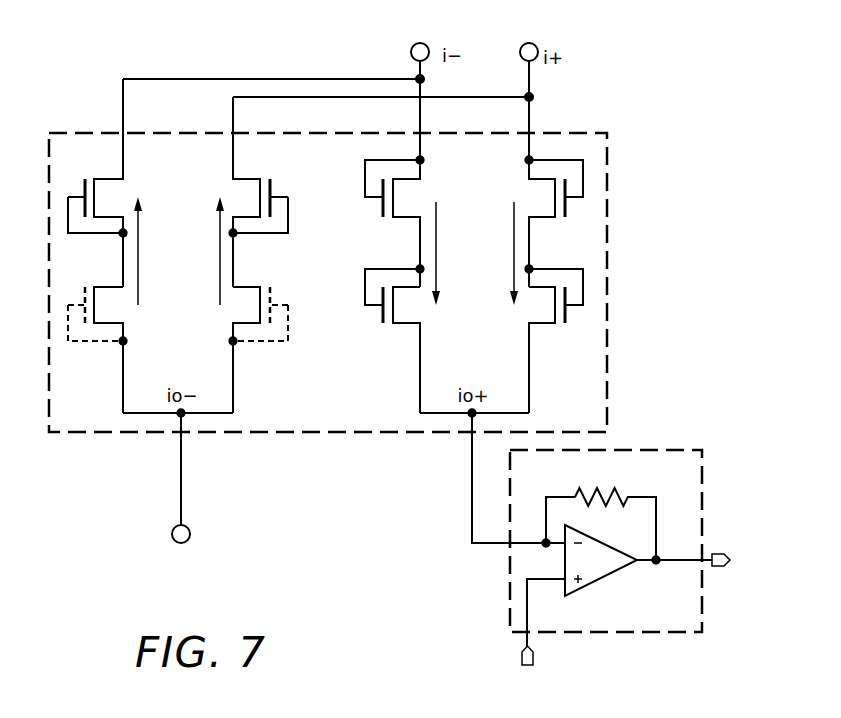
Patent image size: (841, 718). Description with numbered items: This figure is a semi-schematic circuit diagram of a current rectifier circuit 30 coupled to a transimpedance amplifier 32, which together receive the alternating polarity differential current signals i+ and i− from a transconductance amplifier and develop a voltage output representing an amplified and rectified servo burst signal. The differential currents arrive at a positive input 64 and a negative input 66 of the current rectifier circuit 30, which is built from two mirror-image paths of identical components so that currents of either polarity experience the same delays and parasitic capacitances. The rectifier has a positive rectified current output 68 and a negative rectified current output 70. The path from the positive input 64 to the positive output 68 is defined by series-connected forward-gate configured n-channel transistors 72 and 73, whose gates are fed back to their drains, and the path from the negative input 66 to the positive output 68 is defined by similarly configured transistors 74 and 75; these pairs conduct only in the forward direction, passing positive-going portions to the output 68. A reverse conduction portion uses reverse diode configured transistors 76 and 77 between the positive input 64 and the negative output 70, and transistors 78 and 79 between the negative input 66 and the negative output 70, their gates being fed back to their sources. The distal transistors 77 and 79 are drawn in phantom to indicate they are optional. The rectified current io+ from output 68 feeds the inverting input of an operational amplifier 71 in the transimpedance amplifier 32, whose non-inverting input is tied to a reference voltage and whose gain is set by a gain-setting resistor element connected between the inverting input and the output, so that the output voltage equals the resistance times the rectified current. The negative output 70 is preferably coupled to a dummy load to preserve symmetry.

The current rectifier circuit 30 is at (610, 227).
The transimpedance amplifier 32 is at (663, 450).
The positive input 64 is at (520, 47).
The negative input 66 is at (410, 47).
The positive rectified current output 68 is at (472, 502).
The negative rectified current output 70 is at (180, 508).
The operational amplifier 71 is at (603, 568).
The forward-gate configured n-channel transistor 72 is at (540, 196).
The forward-gate configured n-channel transistor 73 is at (540, 309).
The forward-gate configured n-channel transistor 74 is at (411, 197).
The forward-gate configured n-channel transistor 75 is at (412, 309).
The reverse diode configured n-channel transistor 76 is at (243, 195).
The reverse diode configured n-channel transistor 77 is at (245, 309).
The reverse diode configured n-channel transistor 78 is at (118, 197).
The reverse diode configured n-channel transistor 79 is at (118, 309).